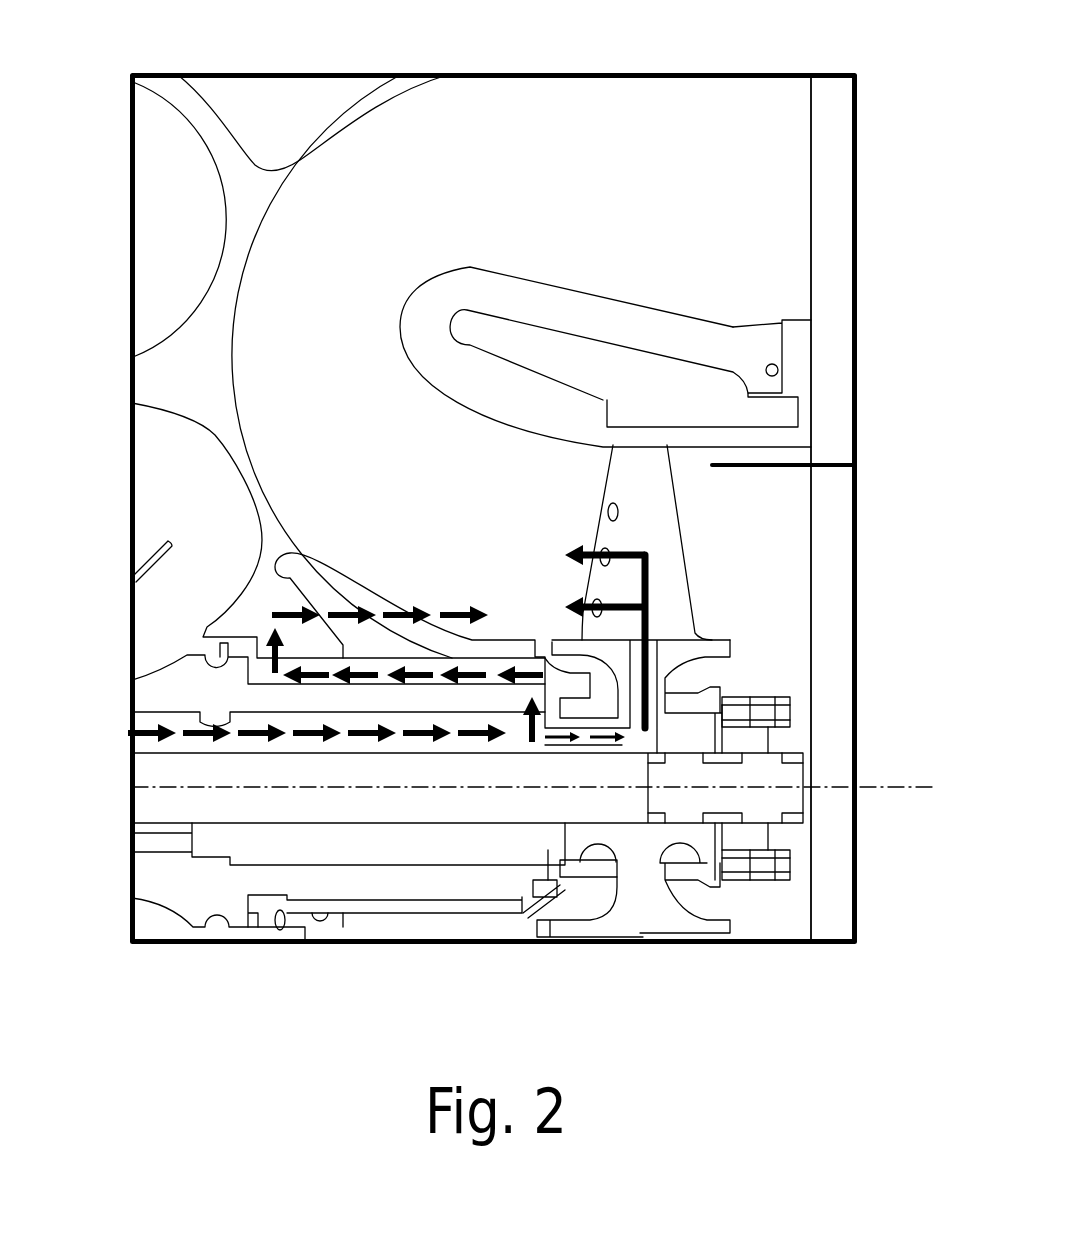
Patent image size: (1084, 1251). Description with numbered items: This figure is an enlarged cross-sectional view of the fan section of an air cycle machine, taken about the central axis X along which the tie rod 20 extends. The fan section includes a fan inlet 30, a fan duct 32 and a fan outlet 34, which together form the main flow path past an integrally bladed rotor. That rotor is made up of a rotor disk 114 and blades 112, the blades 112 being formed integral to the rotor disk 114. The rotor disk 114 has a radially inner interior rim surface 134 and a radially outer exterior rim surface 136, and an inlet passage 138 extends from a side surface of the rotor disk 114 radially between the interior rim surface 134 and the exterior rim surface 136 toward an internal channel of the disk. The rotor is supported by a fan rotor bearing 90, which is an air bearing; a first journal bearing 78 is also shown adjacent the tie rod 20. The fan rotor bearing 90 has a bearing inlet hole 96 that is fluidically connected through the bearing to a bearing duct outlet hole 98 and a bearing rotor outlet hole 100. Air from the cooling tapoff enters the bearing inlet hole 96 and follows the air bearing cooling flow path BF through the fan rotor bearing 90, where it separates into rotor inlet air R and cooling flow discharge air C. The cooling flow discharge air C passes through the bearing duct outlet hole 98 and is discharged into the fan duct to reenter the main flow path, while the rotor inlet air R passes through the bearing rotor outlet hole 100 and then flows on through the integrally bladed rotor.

The tie rod 20 is at (485, 800).
The fan inlet 30 is at (778, 205).
The fan duct 32 is at (313, 348).
The fan outlet 34 is at (777, 522).
The first journal bearing 78 is at (380, 905).
The fan rotor bearing 90 is at (352, 738).
The bearing inlet hole 96 is at (192, 745).
The bearing duct outlet hole 98 is at (544, 658).
The bearing rotor outlet hole 100 is at (582, 745).
The blades 112 is at (668, 597).
The rotor disk 114 is at (732, 645).
The radially inner interior rim surface 134 is at (683, 757).
The radially outer exterior rim surface 136 is at (712, 640).
The inlet passage 138 is at (665, 678).
The rotor inlet air R is at (627, 550).
The cooling flow discharge air C is at (450, 610).
The air bearing cooling flow path BF is at (312, 738).
The axis X is at (544, 789).